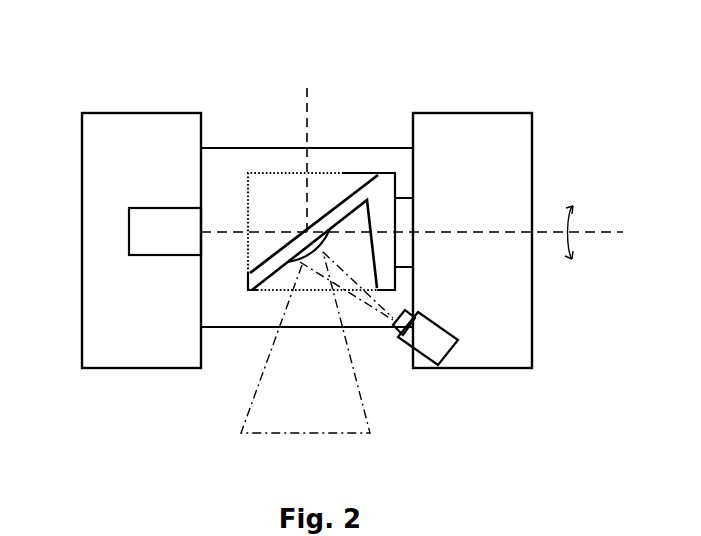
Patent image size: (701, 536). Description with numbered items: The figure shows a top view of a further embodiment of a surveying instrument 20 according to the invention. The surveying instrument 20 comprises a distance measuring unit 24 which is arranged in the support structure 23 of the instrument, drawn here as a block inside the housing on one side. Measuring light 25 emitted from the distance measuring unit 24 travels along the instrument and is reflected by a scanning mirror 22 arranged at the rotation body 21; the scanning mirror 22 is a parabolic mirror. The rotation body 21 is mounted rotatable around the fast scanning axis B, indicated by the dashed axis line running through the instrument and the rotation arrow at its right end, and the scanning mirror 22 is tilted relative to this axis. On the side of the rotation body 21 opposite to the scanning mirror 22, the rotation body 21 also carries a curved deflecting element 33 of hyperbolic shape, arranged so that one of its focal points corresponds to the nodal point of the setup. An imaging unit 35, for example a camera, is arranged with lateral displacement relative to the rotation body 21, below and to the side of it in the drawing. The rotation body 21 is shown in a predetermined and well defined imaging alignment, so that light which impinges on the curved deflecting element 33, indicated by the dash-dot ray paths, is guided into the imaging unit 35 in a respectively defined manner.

The surveying instrument 20 is at (110, 37).
The rotation body 21 is at (377, 190).
The scanning mirror 22 is at (307, 227).
The support structure 23 is at (88, 140).
The distance measuring unit 24 is at (158, 243).
The measuring light 25 is at (307, 88).
The curved deflecting element 33 is at (295, 263).
The imaging unit 35 is at (440, 340).
The scanning axis B is at (585, 230).